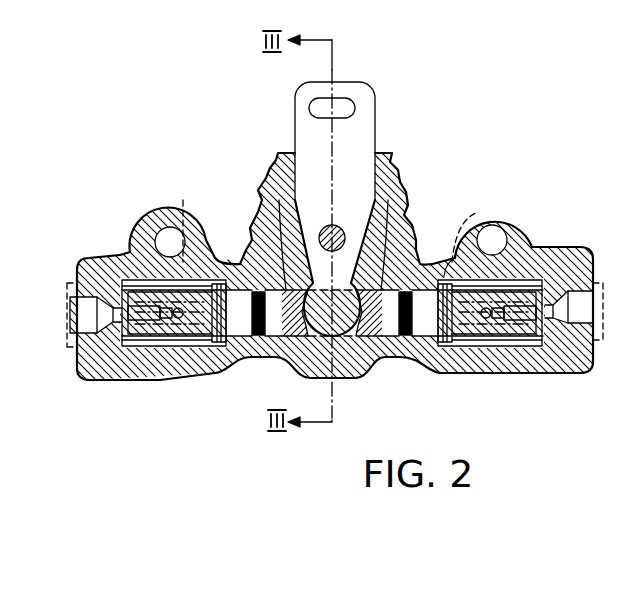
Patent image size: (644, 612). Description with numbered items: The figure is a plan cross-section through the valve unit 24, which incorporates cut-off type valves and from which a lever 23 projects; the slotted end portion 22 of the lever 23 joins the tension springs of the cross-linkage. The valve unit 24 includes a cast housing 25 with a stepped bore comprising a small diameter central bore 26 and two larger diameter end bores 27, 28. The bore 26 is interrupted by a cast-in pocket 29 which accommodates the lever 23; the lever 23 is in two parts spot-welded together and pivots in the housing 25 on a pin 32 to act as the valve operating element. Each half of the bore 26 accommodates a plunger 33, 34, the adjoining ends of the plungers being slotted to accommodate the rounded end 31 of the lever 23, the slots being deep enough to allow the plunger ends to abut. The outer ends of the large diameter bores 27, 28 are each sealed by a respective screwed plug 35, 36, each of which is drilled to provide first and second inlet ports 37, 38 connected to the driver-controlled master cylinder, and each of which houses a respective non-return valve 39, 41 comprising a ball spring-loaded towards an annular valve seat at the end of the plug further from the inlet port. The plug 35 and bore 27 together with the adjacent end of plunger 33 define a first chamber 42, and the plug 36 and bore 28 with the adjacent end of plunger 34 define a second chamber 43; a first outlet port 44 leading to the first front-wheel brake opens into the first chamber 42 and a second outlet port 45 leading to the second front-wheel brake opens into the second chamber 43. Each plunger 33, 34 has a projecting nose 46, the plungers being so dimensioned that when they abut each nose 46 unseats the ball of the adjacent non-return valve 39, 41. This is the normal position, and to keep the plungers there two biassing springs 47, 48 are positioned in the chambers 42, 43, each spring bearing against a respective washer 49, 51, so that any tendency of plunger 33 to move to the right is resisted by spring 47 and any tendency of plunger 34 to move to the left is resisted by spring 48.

The slotted end portion 22 is at (353, 85).
The lever 23 is at (356, 131).
The valve unit 24 is at (510, 204).
The cast housing 25 is at (530, 253).
The central bore 26 is at (408, 340).
The end bore 27 is at (496, 332).
The end bore 28 is at (183, 350).
The cast-in pocket 29 is at (362, 255).
The rounded end 31 is at (290, 376).
The pin 32 is at (320, 238).
The plunger 33 is at (378, 345).
The plunger 34 is at (250, 340).
The screwed plug 35 is at (598, 262).
The screwed plug 36 is at (80, 263).
The first inlet port 37 is at (590, 308).
The second inlet port 38 is at (82, 318).
The non-return valve 39 is at (499, 326).
The non-return valve 41 is at (188, 300).
The first chamber 42 is at (460, 338).
The second chamber 43 is at (183, 200).
The first outlet port 44 is at (503, 210).
The second outlet port 45 is at (170, 207).
The projecting nose 46 is at (156, 236).
The biassing spring 47 is at (450, 342).
The biassing spring 48 is at (208, 352).
The washer 49 is at (444, 275).
The washer 51 is at (228, 258).